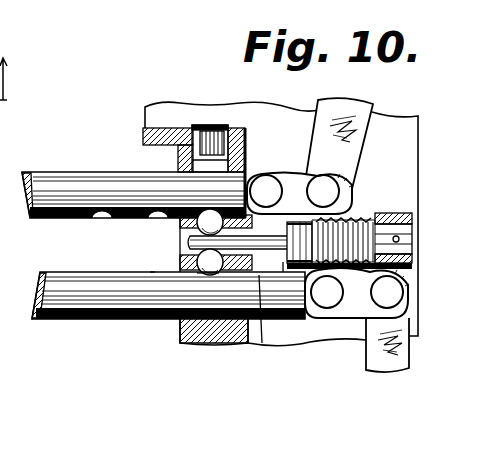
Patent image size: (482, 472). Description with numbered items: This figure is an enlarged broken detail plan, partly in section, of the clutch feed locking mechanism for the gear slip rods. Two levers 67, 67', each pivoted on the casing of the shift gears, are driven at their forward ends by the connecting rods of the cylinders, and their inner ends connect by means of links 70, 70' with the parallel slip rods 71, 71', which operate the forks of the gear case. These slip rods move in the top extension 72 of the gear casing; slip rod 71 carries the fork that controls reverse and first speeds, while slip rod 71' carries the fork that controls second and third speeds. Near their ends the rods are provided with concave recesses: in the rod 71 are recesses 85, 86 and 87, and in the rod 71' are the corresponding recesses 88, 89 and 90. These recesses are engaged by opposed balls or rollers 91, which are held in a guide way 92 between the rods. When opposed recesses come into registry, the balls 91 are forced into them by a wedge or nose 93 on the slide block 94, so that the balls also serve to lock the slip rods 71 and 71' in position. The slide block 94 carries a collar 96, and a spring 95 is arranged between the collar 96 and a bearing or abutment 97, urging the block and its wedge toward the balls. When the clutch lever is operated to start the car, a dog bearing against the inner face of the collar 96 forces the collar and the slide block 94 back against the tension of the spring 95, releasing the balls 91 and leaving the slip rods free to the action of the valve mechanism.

The lever 67 is at (351, 146).
The lever 67' is at (387, 360).
The link 70 is at (300, 178).
The link 70' is at (357, 327).
The slip rod 71 is at (133, 179).
The slip rod 71' is at (168, 317).
The top extension of the gear casing 72 is at (145, 128).
The recess 85 is at (249, 160).
The recess 86 is at (153, 213).
The recess 87 is at (94, 214).
The recess 88 is at (256, 322).
The recess 89 is at (200, 276).
The recess 90 is at (147, 273).
The balls or rollers 91 is at (184, 214).
The guide way 92 is at (182, 262).
The wedge or nose 93 is at (187, 241).
The slide block 94 is at (284, 263).
The spring 95 is at (350, 219).
The collar 96 is at (303, 211).
The bearing or abutment 97 is at (410, 211).